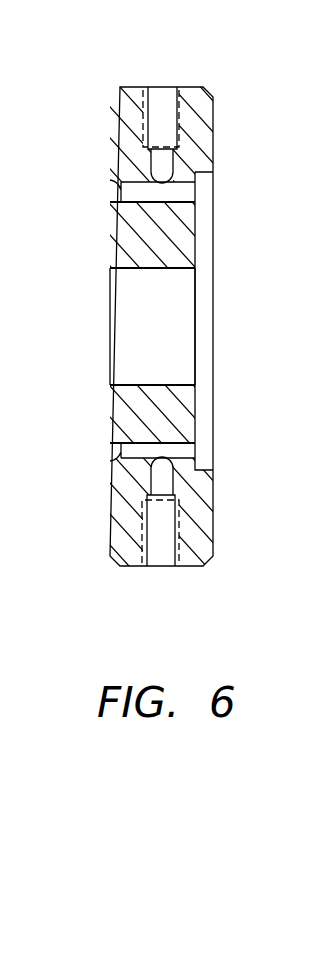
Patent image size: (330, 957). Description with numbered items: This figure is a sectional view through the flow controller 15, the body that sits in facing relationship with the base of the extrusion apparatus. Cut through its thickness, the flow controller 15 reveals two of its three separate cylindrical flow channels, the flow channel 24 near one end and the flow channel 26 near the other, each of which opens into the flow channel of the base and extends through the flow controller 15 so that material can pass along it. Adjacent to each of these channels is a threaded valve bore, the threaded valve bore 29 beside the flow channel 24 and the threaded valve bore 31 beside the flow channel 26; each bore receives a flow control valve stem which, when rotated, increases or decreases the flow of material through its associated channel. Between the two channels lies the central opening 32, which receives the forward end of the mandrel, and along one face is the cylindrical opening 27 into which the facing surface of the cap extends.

The flow controller 15 is at (218, 525).
The flow channel 24 is at (119, 198).
The flow channel 26 is at (119, 455).
The cylindrical opening 27 is at (200, 468).
The threaded valve bore 29 is at (156, 87).
The threaded valve bore 31 is at (174, 532).
The central opening 32 is at (130, 384).